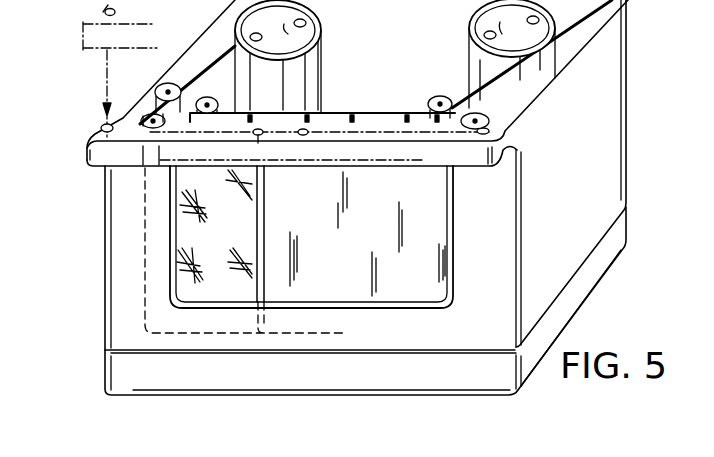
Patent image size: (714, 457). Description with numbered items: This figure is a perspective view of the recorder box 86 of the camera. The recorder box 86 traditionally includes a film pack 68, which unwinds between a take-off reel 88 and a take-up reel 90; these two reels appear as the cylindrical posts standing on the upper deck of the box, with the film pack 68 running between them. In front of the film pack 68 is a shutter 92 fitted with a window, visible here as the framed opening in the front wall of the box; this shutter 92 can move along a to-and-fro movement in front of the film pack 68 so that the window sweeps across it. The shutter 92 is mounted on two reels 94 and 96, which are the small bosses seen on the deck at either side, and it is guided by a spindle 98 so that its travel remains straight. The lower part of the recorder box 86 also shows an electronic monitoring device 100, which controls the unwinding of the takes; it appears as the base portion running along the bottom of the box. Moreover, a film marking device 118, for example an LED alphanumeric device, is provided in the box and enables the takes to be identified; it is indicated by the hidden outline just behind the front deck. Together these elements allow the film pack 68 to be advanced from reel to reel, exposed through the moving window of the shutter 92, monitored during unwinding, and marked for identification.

The film pack 68 is at (378, 113).
The recorder box 86 is at (98, 272).
The take-off reel 88 is at (470, 27).
The take-up reel 90 is at (321, 24).
The shutter 92 is at (193, 227).
The reel 94 is at (492, 120).
The reel 96 is at (157, 90).
The spindle 98 is at (146, 120).
The electronic monitoring device 100 is at (136, 372).
The film marking device 118 is at (430, 160).